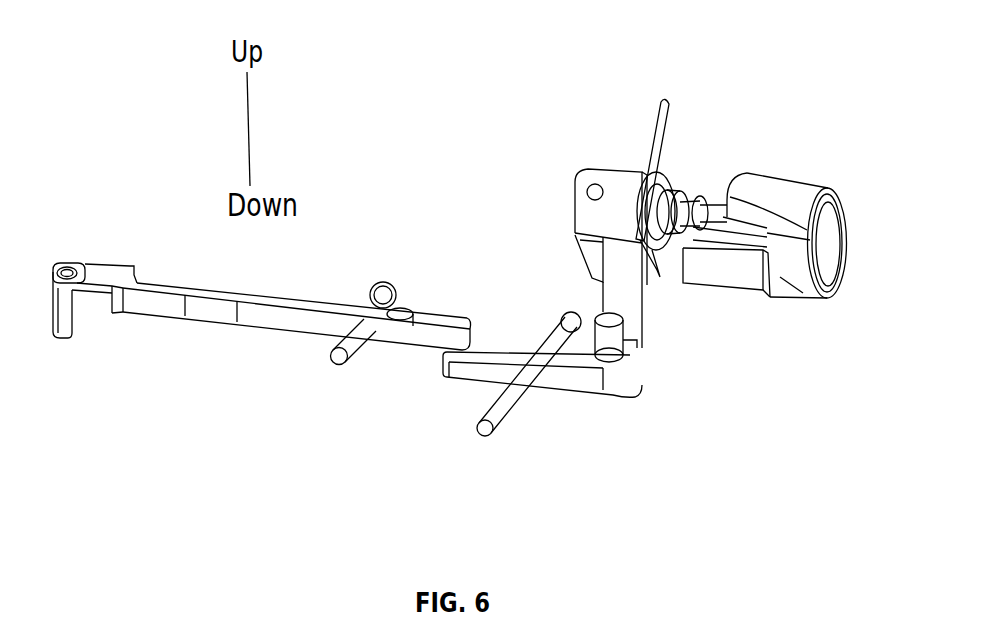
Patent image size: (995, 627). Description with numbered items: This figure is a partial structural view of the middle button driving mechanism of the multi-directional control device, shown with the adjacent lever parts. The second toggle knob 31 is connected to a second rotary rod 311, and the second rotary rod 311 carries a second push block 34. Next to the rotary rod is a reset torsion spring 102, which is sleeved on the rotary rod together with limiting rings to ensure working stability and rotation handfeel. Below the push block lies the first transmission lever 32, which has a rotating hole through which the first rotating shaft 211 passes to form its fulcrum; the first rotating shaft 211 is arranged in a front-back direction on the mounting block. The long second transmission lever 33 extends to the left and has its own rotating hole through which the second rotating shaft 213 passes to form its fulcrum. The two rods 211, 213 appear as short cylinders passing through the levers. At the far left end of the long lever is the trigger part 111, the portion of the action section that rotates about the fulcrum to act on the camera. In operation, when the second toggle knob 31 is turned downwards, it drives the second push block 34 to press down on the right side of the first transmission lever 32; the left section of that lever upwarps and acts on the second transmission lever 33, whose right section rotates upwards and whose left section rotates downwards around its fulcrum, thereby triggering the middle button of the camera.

The reset torsion spring 102 is at (652, 133).
The second rotary rod 311 is at (698, 212).
The second push block 34 is at (593, 213).
The second toggle knob 31 is at (778, 275).
The first transmission lever 32 is at (577, 390).
The second transmission lever 33 is at (217, 320).
The trigger part 111 is at (68, 325).
The second rotating shaft 213 is at (352, 352).
The first rotating shaft 211 is at (507, 413).